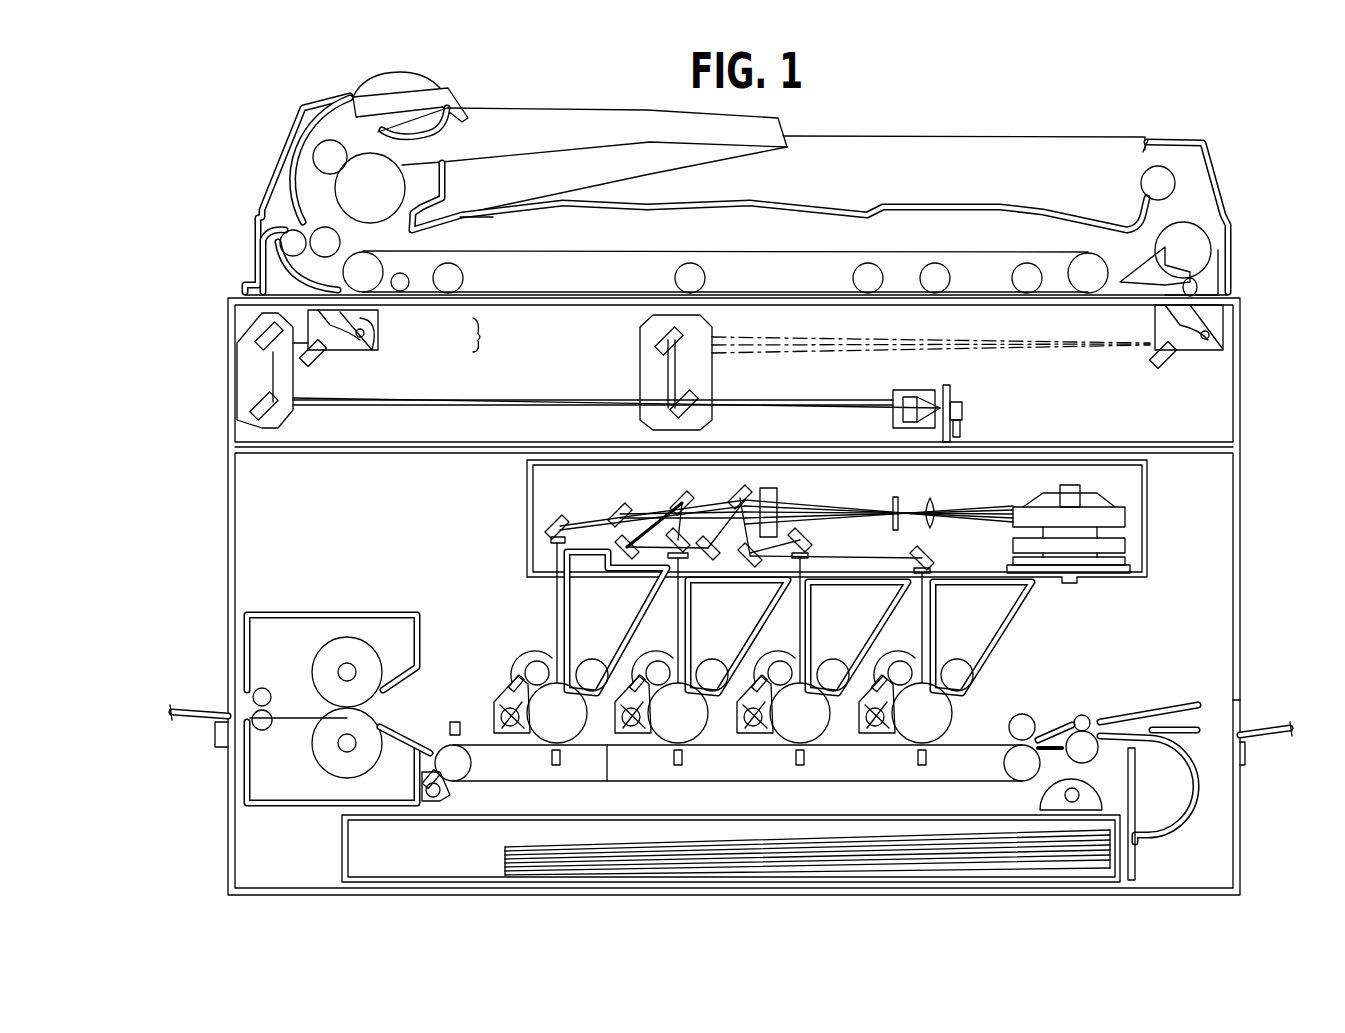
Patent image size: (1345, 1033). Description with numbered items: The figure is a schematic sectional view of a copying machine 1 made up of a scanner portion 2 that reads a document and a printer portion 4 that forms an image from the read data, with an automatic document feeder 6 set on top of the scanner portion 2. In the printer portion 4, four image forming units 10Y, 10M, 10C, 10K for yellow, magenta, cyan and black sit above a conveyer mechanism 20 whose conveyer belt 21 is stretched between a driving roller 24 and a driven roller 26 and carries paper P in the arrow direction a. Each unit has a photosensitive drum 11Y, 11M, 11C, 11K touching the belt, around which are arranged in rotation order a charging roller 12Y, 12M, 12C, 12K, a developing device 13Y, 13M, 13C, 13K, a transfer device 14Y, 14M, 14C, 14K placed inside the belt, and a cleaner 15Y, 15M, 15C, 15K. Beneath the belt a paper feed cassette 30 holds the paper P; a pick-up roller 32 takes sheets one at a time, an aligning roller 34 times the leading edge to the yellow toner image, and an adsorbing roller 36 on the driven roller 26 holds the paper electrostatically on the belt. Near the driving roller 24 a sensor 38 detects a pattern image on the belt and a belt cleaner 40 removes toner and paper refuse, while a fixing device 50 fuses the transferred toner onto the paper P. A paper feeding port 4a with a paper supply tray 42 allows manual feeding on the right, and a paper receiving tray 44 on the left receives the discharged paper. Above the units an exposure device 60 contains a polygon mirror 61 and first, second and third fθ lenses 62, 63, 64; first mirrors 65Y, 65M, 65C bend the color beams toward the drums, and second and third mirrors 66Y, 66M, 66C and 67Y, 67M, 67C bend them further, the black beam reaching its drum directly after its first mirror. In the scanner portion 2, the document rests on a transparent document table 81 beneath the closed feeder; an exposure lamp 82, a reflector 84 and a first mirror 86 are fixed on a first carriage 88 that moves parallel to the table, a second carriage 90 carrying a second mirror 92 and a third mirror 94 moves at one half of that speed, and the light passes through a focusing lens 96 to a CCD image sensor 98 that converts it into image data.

The copying machine 1 is at (1145, 118).
The scanner portion 2 is at (1240, 382).
The printer portion 4 is at (1240, 527).
The paper feeding port 4a is at (1238, 705).
The automatic document feeder 6 is at (1212, 157).
The image forming unit 10K is at (540, 581).
The image forming unit 10C is at (665, 770).
The image forming unit 10M is at (814, 758).
The image forming unit 10Y is at (1008, 656).
The photosensitive drum 11K is at (540, 695).
The photosensitive drum 11C is at (660, 695).
The photosensitive drum 11M is at (782, 695).
The photosensitive drum 11Y is at (905, 695).
The charging roller 12K is at (537, 661).
The charging roller 12C is at (660, 672).
The charging roller 12M is at (780, 672).
The charging roller 12Y is at (940, 700).
The developing device 13K is at (635, 625).
The developing device 13C is at (795, 615).
The developing device 13M is at (912, 610).
The developing device 13Y is at (1035, 600).
The transfer device 14K is at (557, 768).
The transfer device 14C is at (678, 768).
The transfer device 14M is at (800, 768).
The transfer device 14Y is at (922, 768).
The cleaner 15K is at (505, 710).
The cleaner 15C is at (633, 728).
The cleaner 15M is at (745, 728).
The cleaner 15Y is at (876, 728).
The conveyer mechanism 20 is at (495, 790).
The conveyer belt 21 is at (607, 755).
The driving roller 24 is at (472, 763).
The driven roller 26 is at (1005, 763).
The paper feed cassette 30 is at (1095, 880).
The pick-up roller 32 is at (1098, 797).
The aligning roller 34 is at (1085, 716).
The adsorbing roller 36 is at (1022, 714).
The sensor 38 is at (452, 722).
The belt cleaner 40 is at (435, 800).
The paper supply tray 42 is at (1272, 745).
The paper receiving tray 44 is at (190, 712).
The fixing device 50 is at (315, 795).
The exposure device 60 is at (1147, 485).
The polygon mirror 61 is at (1125, 515).
The first fθ lens 62 is at (935, 500).
The second fθ lens 63 is at (895, 497).
The third fθ lens 64 is at (786, 465).
The first mirror 65Y is at (553, 515).
The first mirror 65C is at (618, 512).
The first mirror 65M is at (663, 480).
The second mirror 66C is at (623, 557).
The second mirror 66M is at (708, 556).
The second mirror 66Y is at (775, 540).
The mirror 67C is at (670, 540).
The mirror 67M is at (808, 545).
The mirror 67Y is at (930, 556).
The document table 81 is at (558, 292).
The exposure lamp 82 is at (363, 340).
The reflector 84 is at (378, 330).
The first mirror 86 is at (318, 365).
The first carriage 88 is at (1182, 370).
The second carriage 90 is at (312, 420).
The second mirror 92 is at (260, 341).
The third mirror 94 is at (265, 425).
The focusing lens 96 is at (910, 390).
The CCD image sensor 98 is at (962, 414).
The arrow direction a is at (770, 752).
The paper P is at (958, 855).